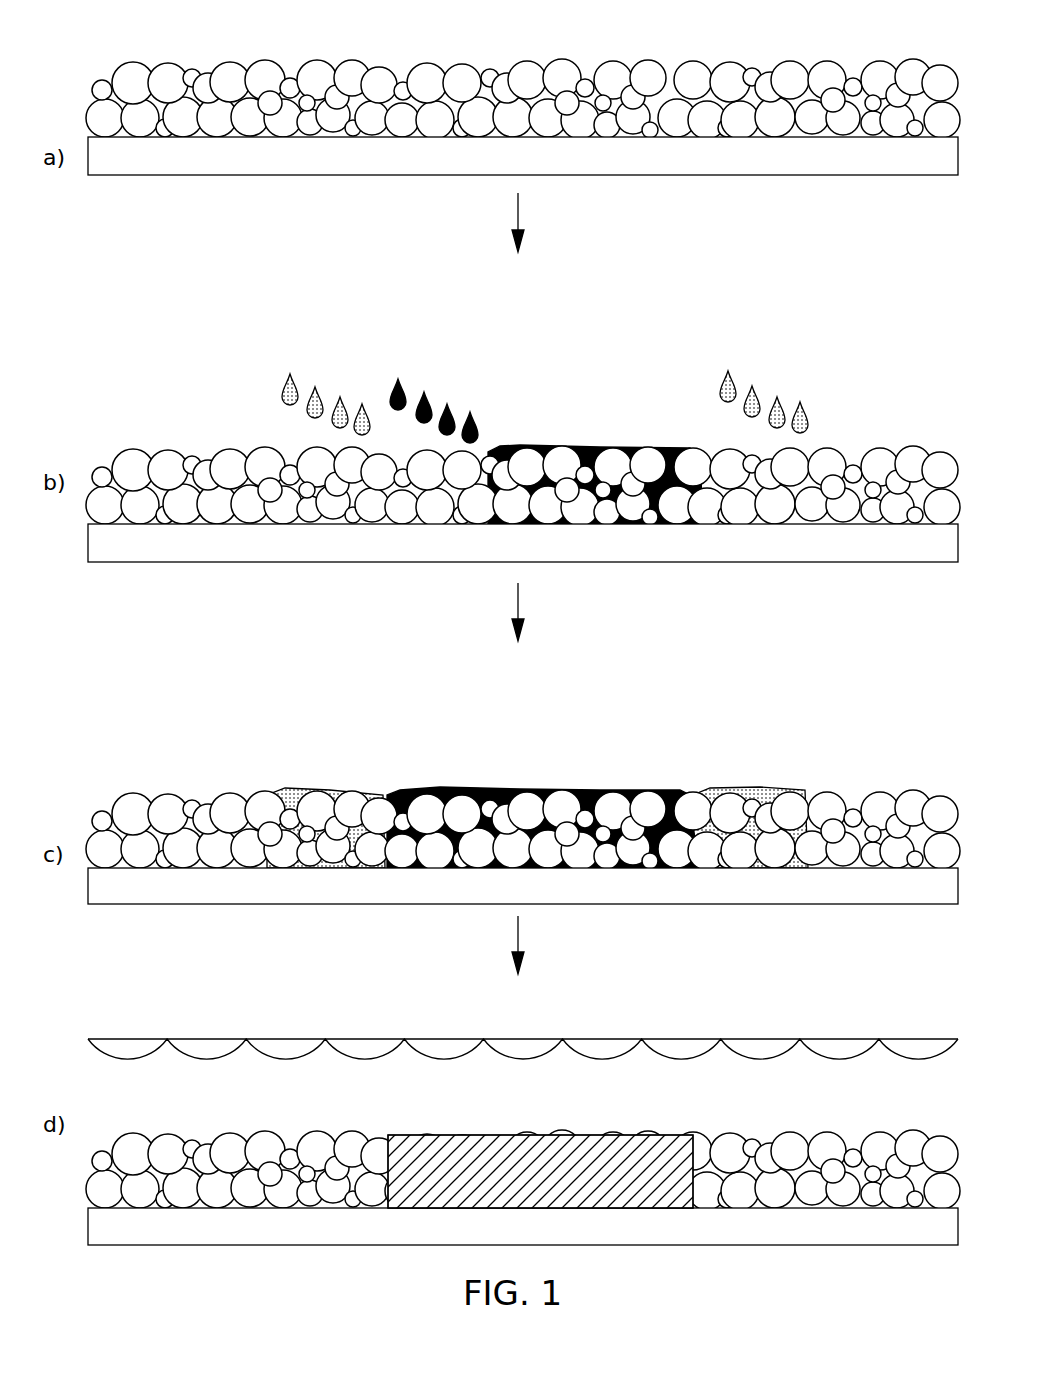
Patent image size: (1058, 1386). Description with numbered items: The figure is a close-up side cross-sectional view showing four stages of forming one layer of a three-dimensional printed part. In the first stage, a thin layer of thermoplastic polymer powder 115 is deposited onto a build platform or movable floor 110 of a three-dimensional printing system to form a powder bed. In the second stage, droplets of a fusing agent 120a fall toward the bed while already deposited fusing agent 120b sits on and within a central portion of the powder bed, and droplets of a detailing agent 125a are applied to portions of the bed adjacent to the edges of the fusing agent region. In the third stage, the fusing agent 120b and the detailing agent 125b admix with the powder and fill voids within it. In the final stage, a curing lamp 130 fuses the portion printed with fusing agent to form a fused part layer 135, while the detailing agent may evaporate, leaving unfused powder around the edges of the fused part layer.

The build platform or movable floor 110 is at (543, 166).
The thermoplastic polymer powder 115 is at (130, 78).
The droplets of fusing agent 120a is at (393, 387).
The fusing agent 120b is at (590, 447).
The droplets of detailing agent 125a is at (285, 390).
The detailing agent 125b is at (283, 790).
The curing lamp 130 is at (283, 1052).
The fused part layer 135 is at (583, 1163).